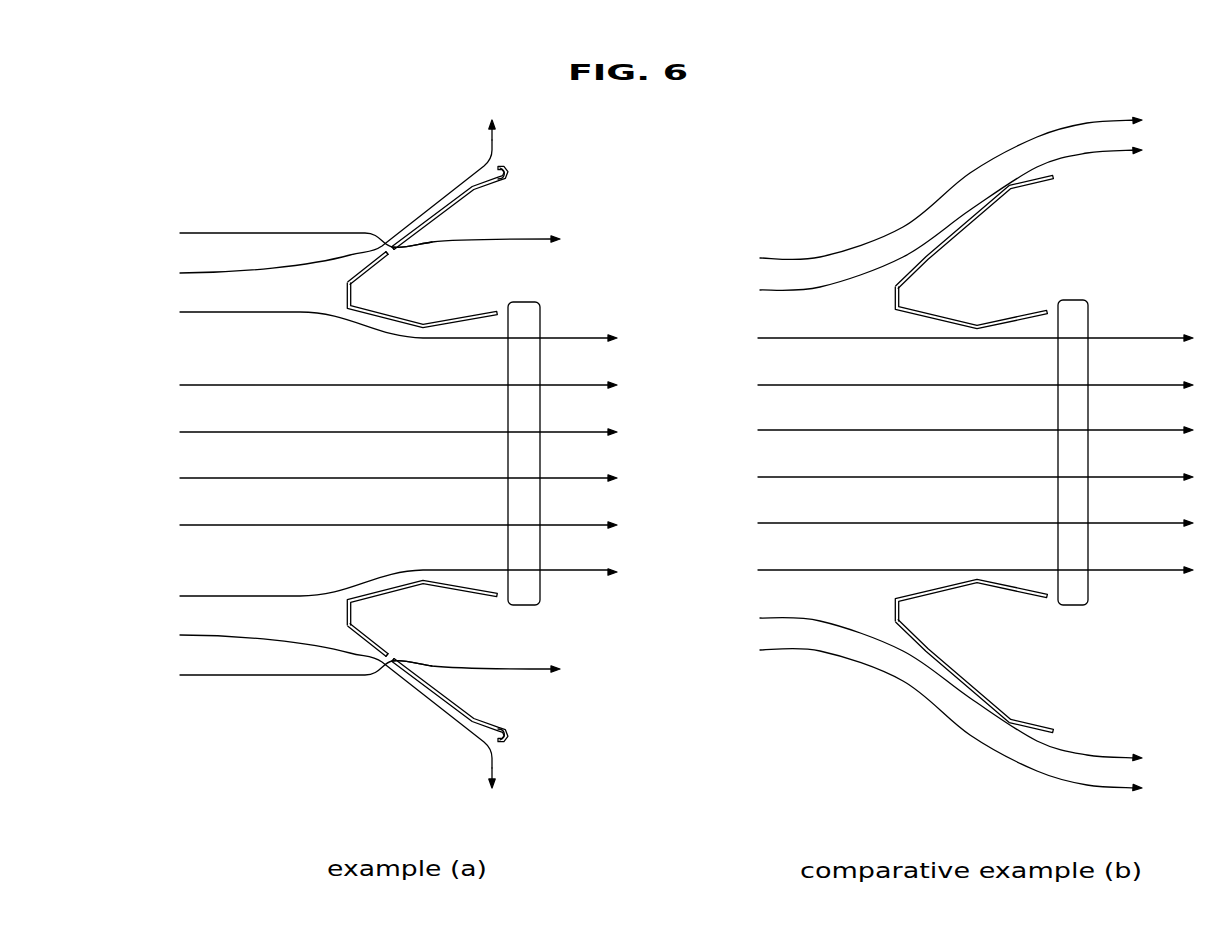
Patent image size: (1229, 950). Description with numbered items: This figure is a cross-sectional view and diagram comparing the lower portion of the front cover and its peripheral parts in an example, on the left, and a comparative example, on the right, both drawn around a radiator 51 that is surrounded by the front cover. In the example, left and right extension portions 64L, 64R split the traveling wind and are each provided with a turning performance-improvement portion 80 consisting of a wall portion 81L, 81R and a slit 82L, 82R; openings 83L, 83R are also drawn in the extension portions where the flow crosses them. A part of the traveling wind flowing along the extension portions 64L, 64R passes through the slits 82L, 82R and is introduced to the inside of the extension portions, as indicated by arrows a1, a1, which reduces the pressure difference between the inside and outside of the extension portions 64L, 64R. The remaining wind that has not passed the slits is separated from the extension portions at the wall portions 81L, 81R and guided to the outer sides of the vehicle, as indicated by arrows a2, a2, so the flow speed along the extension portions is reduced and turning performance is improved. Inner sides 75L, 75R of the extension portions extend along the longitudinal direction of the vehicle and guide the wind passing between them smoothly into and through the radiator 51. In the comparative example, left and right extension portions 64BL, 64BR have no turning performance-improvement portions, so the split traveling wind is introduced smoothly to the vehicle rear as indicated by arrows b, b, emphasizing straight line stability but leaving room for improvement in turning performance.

The radiator 51 is at (532, 318).
The right extension portion 64R is at (430, 210).
The left extension portion 64L is at (426, 697).
The inner side of right extension portion 75R is at (397, 320).
The inner side of left extension portion 75L is at (383, 590).
The right extension portion of comparative example 64BR is at (960, 223).
The left extension portion of comparative example 64BL is at (953, 678).
The turning performance-improvement portion 80 is at (444, 160).
The right wall portion 81R is at (499, 166).
The left wall portion 81L is at (501, 742).
The right slit 82R is at (396, 250).
The left slit 82L is at (397, 660).
The right slit 83R is at (368, 252).
The left slit 83L is at (371, 659).
The arrow a1 is at (321, 454).
The arrow a2 is at (355, 456).
The arrow b is at (940, 453).